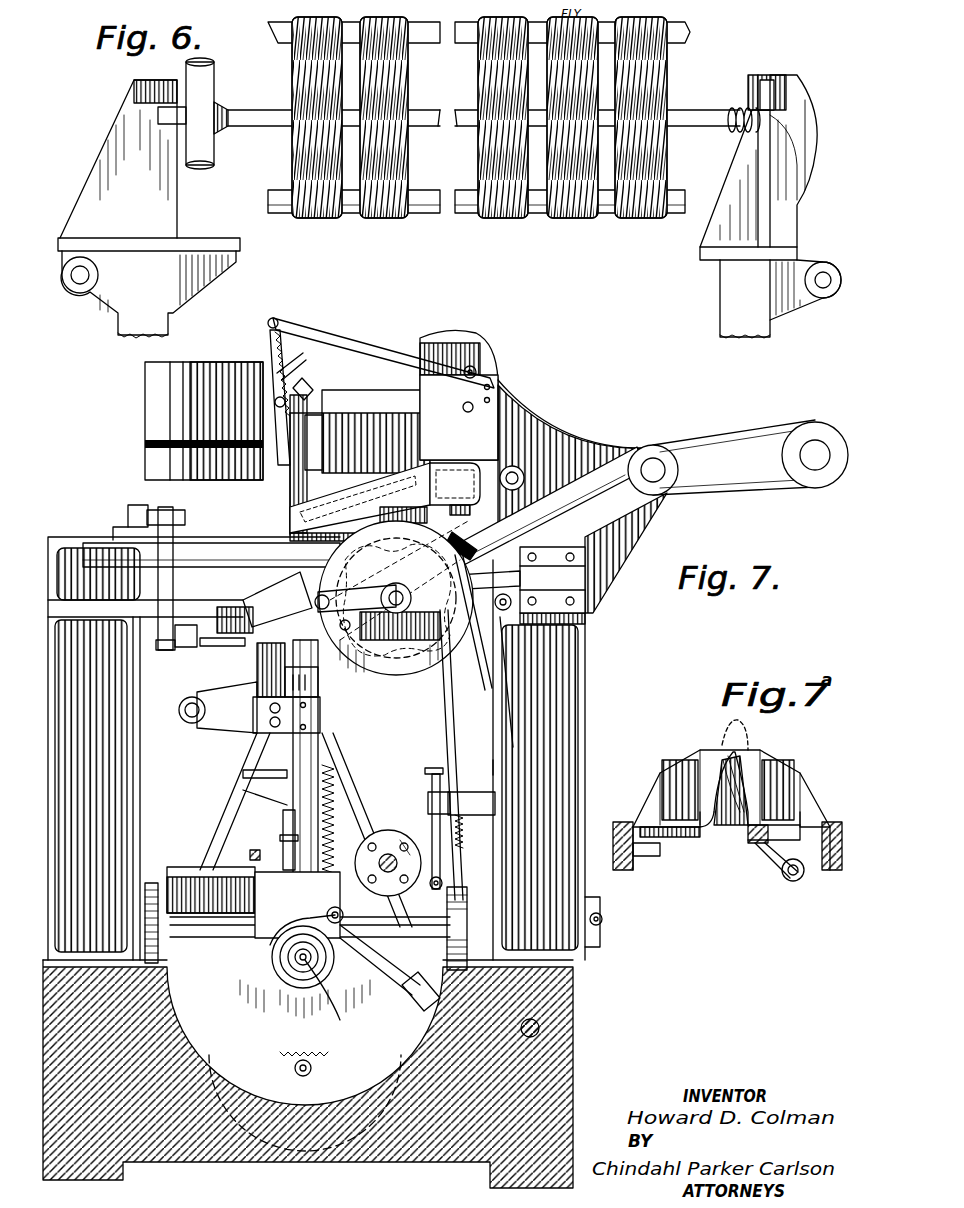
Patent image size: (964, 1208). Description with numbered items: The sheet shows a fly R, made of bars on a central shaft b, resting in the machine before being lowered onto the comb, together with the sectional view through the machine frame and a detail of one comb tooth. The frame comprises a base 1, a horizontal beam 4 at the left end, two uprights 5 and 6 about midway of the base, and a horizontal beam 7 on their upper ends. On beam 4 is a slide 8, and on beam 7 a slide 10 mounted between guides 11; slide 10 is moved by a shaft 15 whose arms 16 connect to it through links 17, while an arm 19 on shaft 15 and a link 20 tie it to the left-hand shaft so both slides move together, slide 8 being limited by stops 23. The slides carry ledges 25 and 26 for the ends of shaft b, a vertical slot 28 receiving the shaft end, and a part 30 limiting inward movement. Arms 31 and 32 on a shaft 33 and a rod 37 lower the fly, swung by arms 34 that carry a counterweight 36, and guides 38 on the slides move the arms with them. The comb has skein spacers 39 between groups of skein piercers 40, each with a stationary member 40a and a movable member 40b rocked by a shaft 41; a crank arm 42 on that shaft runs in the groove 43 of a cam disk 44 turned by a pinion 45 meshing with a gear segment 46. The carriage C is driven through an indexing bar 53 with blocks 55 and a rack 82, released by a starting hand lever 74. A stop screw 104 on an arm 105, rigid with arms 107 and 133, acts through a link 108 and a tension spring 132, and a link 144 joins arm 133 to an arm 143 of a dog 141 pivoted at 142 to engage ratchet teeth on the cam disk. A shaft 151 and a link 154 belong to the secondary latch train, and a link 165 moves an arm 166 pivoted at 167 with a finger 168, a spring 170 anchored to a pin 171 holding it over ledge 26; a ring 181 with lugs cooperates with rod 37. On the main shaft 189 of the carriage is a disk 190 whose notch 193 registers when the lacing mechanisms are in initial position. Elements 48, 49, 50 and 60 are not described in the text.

In FIG. 7, the base 1 is at (560, 1021).
In FIG. 6, the horizontal beam 4 is at (152, 297).
In FIG. 7, the upright 5 is at (100, 771).
In FIG. 7, the upright 6 is at (562, 716).
In FIG. 6, the horizontal beam 7 is at (742, 285).
In FIG. 7, the horizontal beam 7 is at (86, 548).
In FIG. 6, the slide 8 is at (96, 200).
In FIG. 6, the slide 10 is at (720, 240).
In FIG. 7, the slide 10 is at (145, 460).
In FIG. 7, the guides 11 is at (122, 524).
In FIG. 7, the shaft 15 is at (246, 558).
In FIG. 7, the arms 16 is at (173, 526).
In FIG. 7, the links 17 is at (163, 510).
In FIG. 7, the arm 19 is at (160, 640).
In FIG. 7, the link 20 is at (184, 647).
In FIG. 6, the stops 23 is at (60, 238).
In FIG. 6, the ledge 25 is at (164, 124).
In FIG. 6, the ledge 26 is at (777, 125).
In FIG. 7, the ledge 26 is at (300, 418).
In FIG. 7, the vertical slot 28 is at (314, 438).
In FIG. 7, the stop part 30 is at (330, 395).
In FIG. 6, the fly-lowering arm 31 is at (160, 98).
In FIG. 6, the fly-lowering arm 32 is at (781, 106).
In FIG. 7, the fly-lowering arm 32 is at (410, 480).
In FIG. 7, the shaft 33 is at (656, 460).
In FIG. 7, the hand arms 34 is at (548, 420).
In FIG. 7, the counterweight 36 is at (818, 452).
In FIG. 7, the rod 37 is at (524, 477).
In FIG. 7, the guides 38 is at (470, 450).
In FIG. 7, the skein spacers 39 is at (281, 590).
In FIG. 7A, the skein spacers 39 is at (655, 790).
In FIG. 7A, the skein piercer 40 is at (757, 746).
In FIG. 7A, the stationary member 40a is at (725, 822).
In FIG. 7A, the movable member 40b is at (724, 733).
In FIG. 7, the shaft 41 is at (336, 598).
In FIG. 7A, the shaft 41 is at (756, 845).
In FIG. 7, the crank arm 42 is at (350, 623).
In FIG. 7A, the crank arm 42 is at (802, 880).
In FIG. 7, the cam groove 43 is at (393, 662).
In FIG. 7, the cam disk 44 is at (418, 676).
In FIG. 7, the pinion 45 is at (395, 582).
In FIG. 7, the gear segment 46 is at (466, 668).
In FIG. 7, the gear 48 is at (152, 881).
In FIG. 7, the shaft 49 is at (470, 948).
In FIG. 7, the gear 50 is at (162, 963).
In FIG. 7, the indexing bar 53 is at (280, 852).
In FIG. 7, the blocks 55 is at (295, 770).
In FIG. 7, the gear 60 is at (388, 863).
In FIG. 7, the starting hand lever 74 is at (218, 647).
In FIG. 7, the rack 82 is at (256, 858).
In FIG. 7, the stop screw 104 is at (444, 883).
In FIG. 7, the arm 105 is at (432, 812).
In FIG. 7, the arm 107 is at (428, 778).
In FIG. 7, the link 108 is at (432, 768).
In FIG. 7, the tension spring 132 is at (464, 838).
In FIG. 7, the arm 133 is at (456, 792).
In FIG. 7, the dog 141 is at (500, 536).
In FIG. 7, the pivot 142 is at (531, 575).
In FIG. 7, the arm 143 is at (503, 576).
In FIG. 7, the link 144 is at (453, 710).
In FIG. 7, the shaft 151 is at (602, 921).
In FIG. 7, the link 154 is at (495, 762).
In FIG. 7, the link 165 is at (326, 344).
In FIG. 7, the arm 166 is at (270, 325).
In FIG. 7, the pivot axis 167 is at (283, 375).
In FIG. 7, the finger 168 is at (304, 386).
In FIG. 7, the spring 170 is at (268, 356).
In FIG. 7, the pin 171 is at (275, 403).
In FIG. 7, the ring 181 is at (490, 368).
In FIG. 7, the main shaft 189 is at (320, 992).
In FIG. 7, the disk 190 is at (272, 958).
In FIG. 7, the notch 193 is at (300, 930).
In FIG. 6, the fly shaft b is at (265, 112).
In FIG. 7, the fly shaft b is at (378, 492).
In FIG. 6, the carriage C is at (276, 36).
In FIG. 7, the carriage C is at (232, 850).
In FIG. 6, the fly R is at (680, 74).